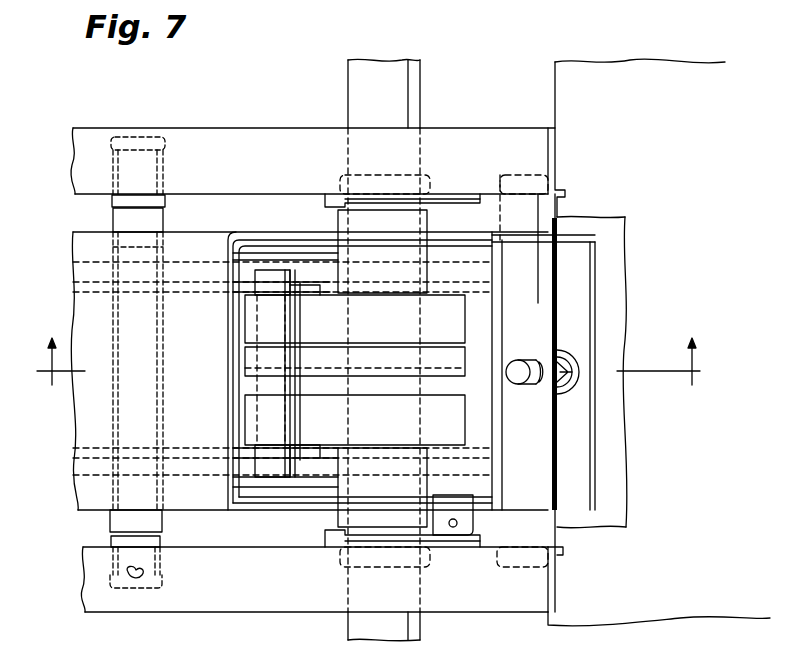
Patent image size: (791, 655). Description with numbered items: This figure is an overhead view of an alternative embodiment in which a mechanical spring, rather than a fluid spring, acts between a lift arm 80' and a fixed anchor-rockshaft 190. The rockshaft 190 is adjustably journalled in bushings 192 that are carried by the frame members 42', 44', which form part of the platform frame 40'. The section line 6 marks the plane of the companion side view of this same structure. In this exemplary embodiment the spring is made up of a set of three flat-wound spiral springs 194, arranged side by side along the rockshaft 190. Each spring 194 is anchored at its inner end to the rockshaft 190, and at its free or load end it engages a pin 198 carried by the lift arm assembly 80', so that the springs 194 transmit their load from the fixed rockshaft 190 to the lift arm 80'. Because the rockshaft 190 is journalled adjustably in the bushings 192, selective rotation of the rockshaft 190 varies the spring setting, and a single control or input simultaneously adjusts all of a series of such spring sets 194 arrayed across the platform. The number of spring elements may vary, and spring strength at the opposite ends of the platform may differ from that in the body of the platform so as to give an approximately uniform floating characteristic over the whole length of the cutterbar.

The section line 6- 6 is at (371, 369).
The platform frame 40' is at (631, 342).
The frame member 42' is at (314, 601).
The frame member 44' is at (313, 144).
The lift arm 80' is at (280, 362).
The anchor-rockshaft 190 is at (348, 82).
The bushings 192 is at (326, 200).
The flat-wound spiral springs 194 is at (386, 334).
The pin 198 is at (272, 465).